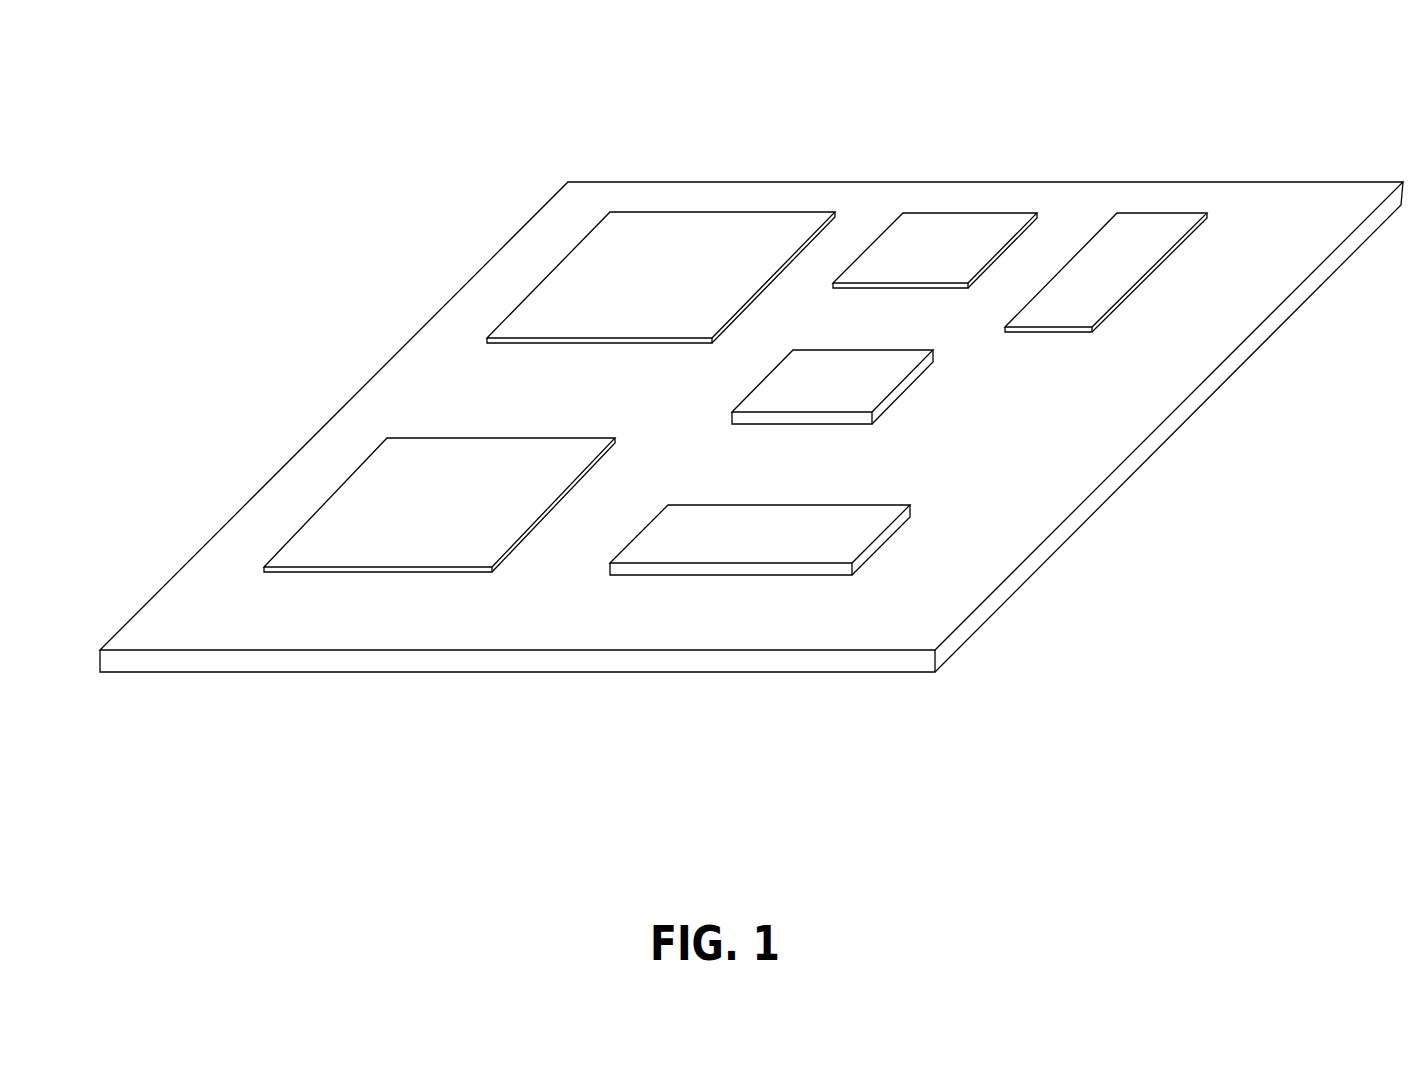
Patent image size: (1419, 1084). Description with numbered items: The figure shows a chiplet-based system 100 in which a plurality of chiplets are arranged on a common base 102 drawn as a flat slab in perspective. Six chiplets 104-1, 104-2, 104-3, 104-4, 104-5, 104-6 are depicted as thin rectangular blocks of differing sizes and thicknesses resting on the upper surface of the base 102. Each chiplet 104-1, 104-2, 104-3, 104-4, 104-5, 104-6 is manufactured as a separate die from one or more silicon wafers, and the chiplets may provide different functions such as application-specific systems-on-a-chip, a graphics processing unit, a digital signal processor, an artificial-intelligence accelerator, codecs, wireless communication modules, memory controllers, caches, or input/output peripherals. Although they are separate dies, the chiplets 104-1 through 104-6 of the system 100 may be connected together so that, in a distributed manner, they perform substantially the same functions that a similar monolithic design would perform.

The chiplet-based system 100 is at (1280, 131).
The substrate / circuit board 102 is at (568, 182).
The chiplet 104-1 is at (462, 438).
The chiplet 104-2 is at (630, 343).
The chiplet 104-3 is at (722, 503).
The chiplet 104-4 is at (813, 350).
The chiplet 104-5 is at (917, 288).
The chiplet 104-6 is at (1040, 332).